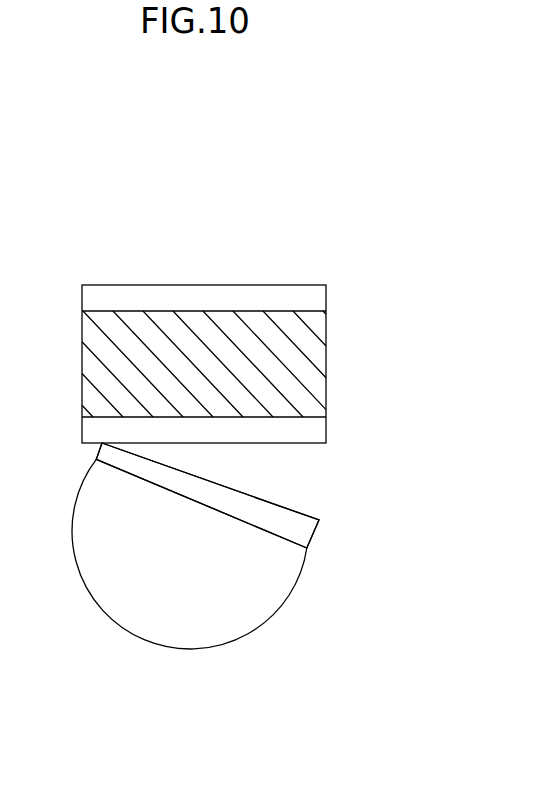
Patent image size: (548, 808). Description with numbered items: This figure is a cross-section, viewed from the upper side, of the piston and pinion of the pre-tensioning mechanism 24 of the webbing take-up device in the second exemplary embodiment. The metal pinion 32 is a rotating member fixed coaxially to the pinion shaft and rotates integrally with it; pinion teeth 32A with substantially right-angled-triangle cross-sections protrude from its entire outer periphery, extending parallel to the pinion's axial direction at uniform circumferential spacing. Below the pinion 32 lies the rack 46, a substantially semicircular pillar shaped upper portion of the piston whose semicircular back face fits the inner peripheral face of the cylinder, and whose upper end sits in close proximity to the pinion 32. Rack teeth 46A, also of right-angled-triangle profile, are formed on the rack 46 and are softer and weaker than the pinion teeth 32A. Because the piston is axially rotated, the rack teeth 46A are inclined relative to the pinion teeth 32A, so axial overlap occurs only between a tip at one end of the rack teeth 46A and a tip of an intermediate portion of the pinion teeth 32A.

The pre-tensioning mechanism 24 is at (188, 224).
The pinion 32 is at (244, 285).
The pinion teeth 32A is at (261, 430).
The rack 46 is at (142, 639).
The rack teeth 46A is at (302, 531).